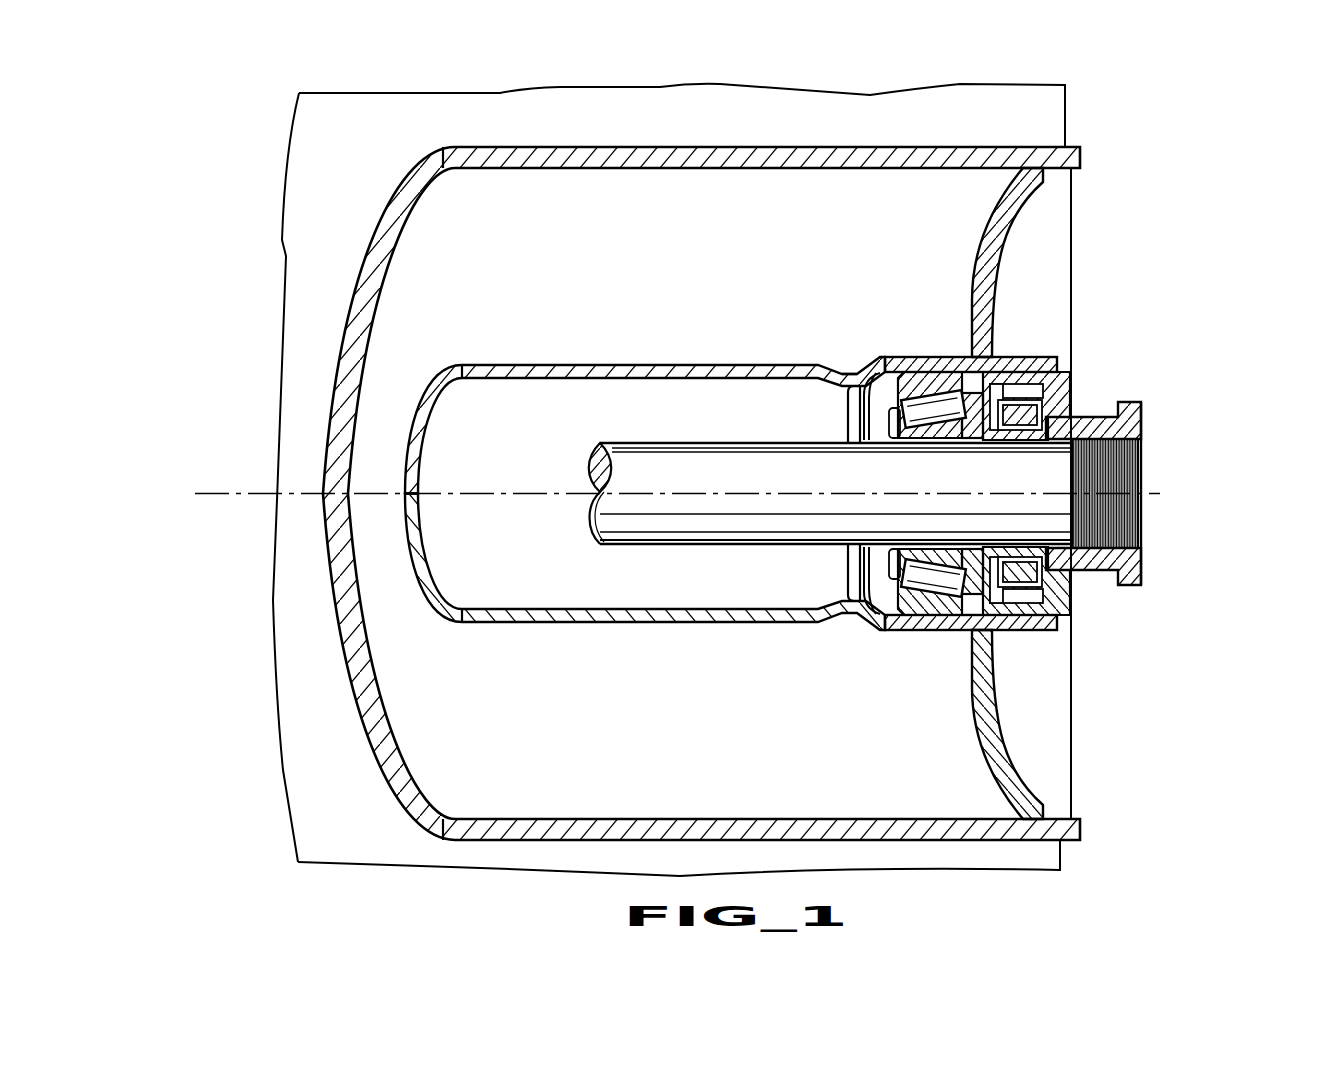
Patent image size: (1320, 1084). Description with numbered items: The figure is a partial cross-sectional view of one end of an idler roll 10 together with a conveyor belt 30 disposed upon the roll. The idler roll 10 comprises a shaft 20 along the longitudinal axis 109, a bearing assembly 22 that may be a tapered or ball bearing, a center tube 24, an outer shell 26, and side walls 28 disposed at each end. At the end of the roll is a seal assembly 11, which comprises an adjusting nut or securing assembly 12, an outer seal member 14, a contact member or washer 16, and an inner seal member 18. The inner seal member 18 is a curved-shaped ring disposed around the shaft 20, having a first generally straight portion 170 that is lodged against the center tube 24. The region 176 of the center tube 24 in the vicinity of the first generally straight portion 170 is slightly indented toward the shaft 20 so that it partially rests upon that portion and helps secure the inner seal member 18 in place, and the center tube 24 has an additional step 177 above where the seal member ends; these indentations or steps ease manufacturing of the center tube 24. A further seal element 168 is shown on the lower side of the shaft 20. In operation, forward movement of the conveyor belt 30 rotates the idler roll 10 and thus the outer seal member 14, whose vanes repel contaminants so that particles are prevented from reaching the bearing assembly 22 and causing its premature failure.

The idler roll 10 is at (1230, 150).
The seal assembly 11 is at (1137, 340).
The adjusting nut or securing assembly 12 is at (1142, 416).
The outer seal member 14 is at (1062, 385).
The contact member or washer 16 is at (1035, 578).
The inner seal member 18 is at (848, 410).
The shaft 20 is at (736, 487).
The bearing assembly 22 is at (935, 597).
The center tube 24 is at (618, 365).
The outer shell 26 is at (605, 147).
The side walls 28 is at (977, 305).
The conveyor belt 30 is at (1058, 118).
The longitudinal axis 109 is at (233, 492).
The lower seal lip 168 is at (868, 572).
The first generally straight portion 170 is at (862, 428).
The region of the center tube 176 is at (849, 357).
The additional step 177 is at (957, 360).